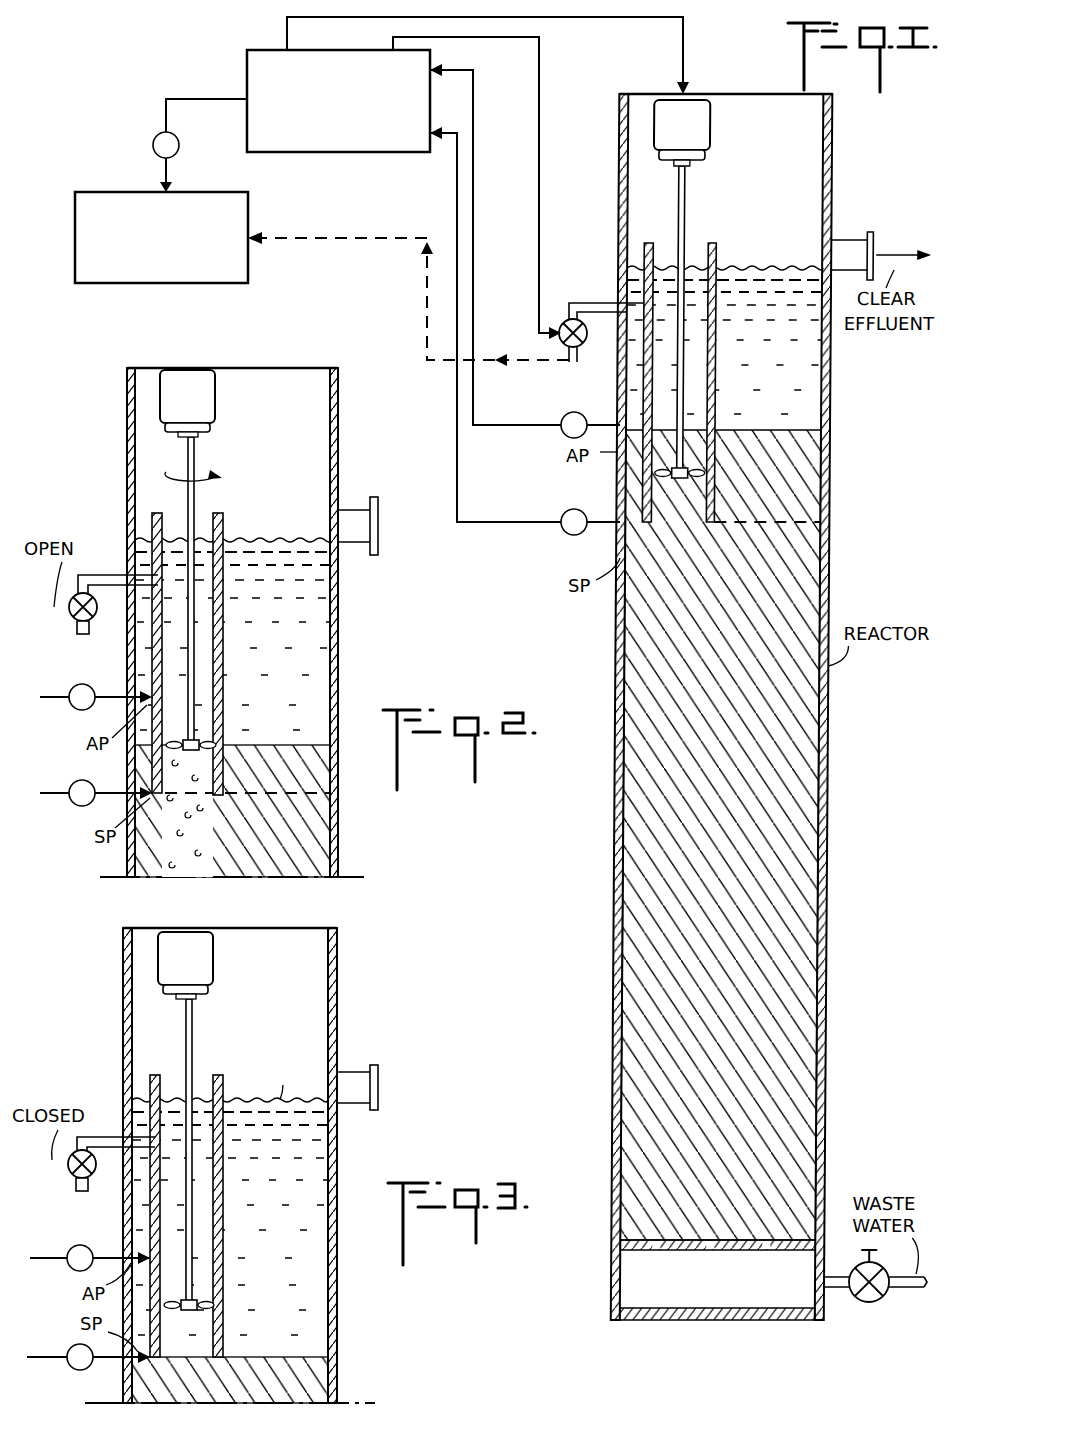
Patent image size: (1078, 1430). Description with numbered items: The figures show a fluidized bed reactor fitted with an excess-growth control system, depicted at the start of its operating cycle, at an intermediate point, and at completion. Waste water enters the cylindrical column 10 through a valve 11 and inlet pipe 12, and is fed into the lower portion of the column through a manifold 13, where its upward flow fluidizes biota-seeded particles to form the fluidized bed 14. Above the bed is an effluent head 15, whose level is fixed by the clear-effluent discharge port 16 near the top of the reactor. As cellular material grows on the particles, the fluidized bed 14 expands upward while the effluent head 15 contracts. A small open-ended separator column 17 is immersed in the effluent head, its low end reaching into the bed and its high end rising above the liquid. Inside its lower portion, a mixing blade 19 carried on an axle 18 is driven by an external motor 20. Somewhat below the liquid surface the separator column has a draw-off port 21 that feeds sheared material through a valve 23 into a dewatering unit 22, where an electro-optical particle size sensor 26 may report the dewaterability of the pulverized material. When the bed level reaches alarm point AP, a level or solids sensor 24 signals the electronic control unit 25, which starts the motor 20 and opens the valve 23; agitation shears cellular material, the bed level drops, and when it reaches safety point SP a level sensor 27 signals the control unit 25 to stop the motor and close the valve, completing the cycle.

In FIG. 1, the cylindrical column 10 is at (614, 852).
In FIG. 2, the cylindrical column 10 is at (338, 430).
In FIG. 3, the cylindrical column 10 is at (337, 1000).
In FIG. 1, the valve 11 is at (873, 1297).
In FIG. 1, the inlet pipe 12 is at (843, 1290).
In FIG. 1, the manifold 13 is at (690, 1250).
In FIG. 1, the fluidized bed 14 is at (795, 853).
In FIG. 2, the fluidized bed 14 is at (305, 825).
In FIG. 3, the fluidized bed 14 is at (320, 1370).
In FIG. 1, the effluent head 15 is at (773, 268).
In FIG. 3, the effluent head 15 is at (284, 1080).
In FIG. 1, the clear-effluent discharge port 16 is at (848, 240).
In FIG. 2, the clear-effluent discharge port 16 is at (372, 510).
In FIG. 3, the clear-effluent discharge port 16 is at (352, 1072).
In FIG. 1, the separator column 17 is at (715, 250).
In FIG. 2, the separator column 17 is at (223, 520).
In FIG. 3, the separator column 17 is at (223, 1080).
In FIG. 1, the axle 18 is at (683, 190).
In FIG. 2, the axle 18 is at (194, 452).
In FIG. 3, the axle 18 is at (192, 1005).
In FIG. 1, the mixing blade 19 is at (655, 473).
In FIG. 2, the mixing blade 19 is at (205, 742).
In FIG. 3, the mixing blade 19 is at (203, 1302).
In FIG. 1, the motor 20 is at (708, 133).
In FIG. 2, the motor 20 is at (208, 405).
In FIG. 3, the motor 20 is at (206, 960).
In FIG. 1, the draw-off port 21 is at (594, 303).
In FIG. 2, the draw-off port 21 is at (95, 562).
In FIG. 3, the draw-off port 21 is at (96, 1130).
In FIG. 1, the dewatering unit 22 is at (240, 275).
In FIG. 1, the valve 23 is at (586, 345).
In FIG. 2, the valve 23 is at (70, 622).
In FIG. 3, the valve 23 is at (70, 1178).
In FIG. 1, the level or solids sensor 24 is at (562, 414).
In FIG. 2, the level or solids sensor 24 is at (73, 708).
In FIG. 3, the level or solids sensor 24 is at (70, 1245).
In FIG. 1, the electronic control unit 25 is at (378, 152).
In FIG. 1, the electro-optical particle size sensor 26 is at (179, 148).
In FIG. 1, the level sensor 27 is at (562, 535).
In FIG. 2, the level sensor 27 is at (74, 805).
In FIG. 3, the level sensor 27 is at (70, 1344).